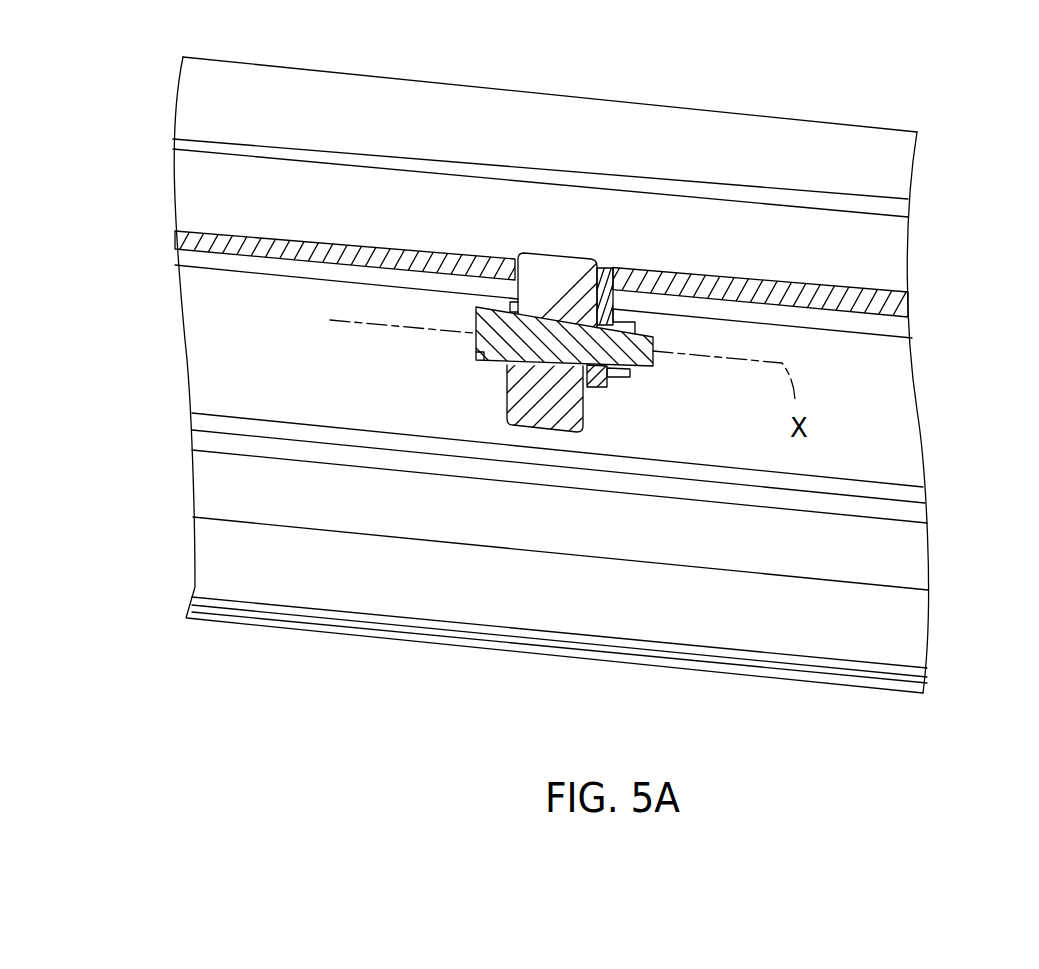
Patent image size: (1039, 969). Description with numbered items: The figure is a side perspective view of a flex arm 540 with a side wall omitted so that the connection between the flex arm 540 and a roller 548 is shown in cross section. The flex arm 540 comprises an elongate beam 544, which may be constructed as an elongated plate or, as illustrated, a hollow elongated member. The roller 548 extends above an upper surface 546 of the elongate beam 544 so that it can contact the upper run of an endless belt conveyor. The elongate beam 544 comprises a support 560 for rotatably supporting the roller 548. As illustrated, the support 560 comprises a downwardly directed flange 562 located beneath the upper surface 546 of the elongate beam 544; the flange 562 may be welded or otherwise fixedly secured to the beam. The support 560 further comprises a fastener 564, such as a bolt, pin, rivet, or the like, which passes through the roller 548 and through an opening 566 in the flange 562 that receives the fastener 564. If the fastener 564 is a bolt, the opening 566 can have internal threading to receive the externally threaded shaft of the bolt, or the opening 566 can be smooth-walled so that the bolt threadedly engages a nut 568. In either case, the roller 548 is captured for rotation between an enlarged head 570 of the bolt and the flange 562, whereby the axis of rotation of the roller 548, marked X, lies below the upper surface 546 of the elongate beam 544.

The flex arm 540 is at (945, 300).
The elongate beam 544 is at (928, 409).
The upper surface 546 is at (883, 297).
The roller 548 is at (558, 260).
The opening 566 is at (603, 325).
The fastener 564 is at (492, 377).
The enlarged head 570 is at (477, 352).
The support 560 is at (592, 434).
The flange 562 is at (598, 387).
The nut 568 is at (617, 377).